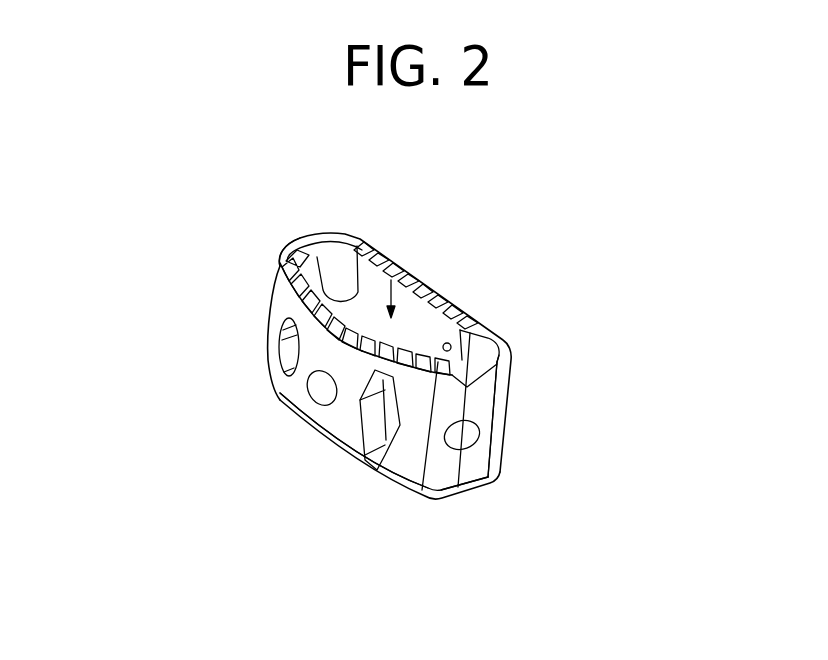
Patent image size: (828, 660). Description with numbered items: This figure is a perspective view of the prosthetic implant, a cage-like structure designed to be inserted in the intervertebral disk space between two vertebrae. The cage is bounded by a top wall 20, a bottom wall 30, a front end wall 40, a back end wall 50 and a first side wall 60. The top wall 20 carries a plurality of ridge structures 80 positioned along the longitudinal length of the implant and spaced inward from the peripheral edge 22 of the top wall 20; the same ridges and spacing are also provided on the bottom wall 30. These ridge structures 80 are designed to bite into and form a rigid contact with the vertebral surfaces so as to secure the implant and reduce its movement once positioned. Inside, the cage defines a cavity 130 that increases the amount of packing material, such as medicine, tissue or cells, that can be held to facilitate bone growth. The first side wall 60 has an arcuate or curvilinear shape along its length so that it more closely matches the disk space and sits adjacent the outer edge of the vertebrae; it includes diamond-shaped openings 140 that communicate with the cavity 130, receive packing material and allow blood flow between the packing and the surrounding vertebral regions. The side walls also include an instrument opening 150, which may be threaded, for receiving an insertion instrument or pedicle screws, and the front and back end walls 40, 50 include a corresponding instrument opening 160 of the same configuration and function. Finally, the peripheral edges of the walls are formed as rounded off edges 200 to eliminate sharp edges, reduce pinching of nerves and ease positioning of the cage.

The top wall 20 is at (342, 236).
The peripheral edge 22 is at (457, 313).
The bottom wall 30 is at (350, 463).
The front end wall 40 is at (280, 287).
The back end wall 50 is at (485, 395).
The first side wall 60 is at (305, 405).
The ridge structures 80 is at (298, 299).
The cavity 130 is at (388, 276).
The openings 140 is at (361, 243).
The instrument opening 150 is at (300, 428).
The instrument opening 160 is at (488, 472).
The rounded off edges 200 is at (282, 266).